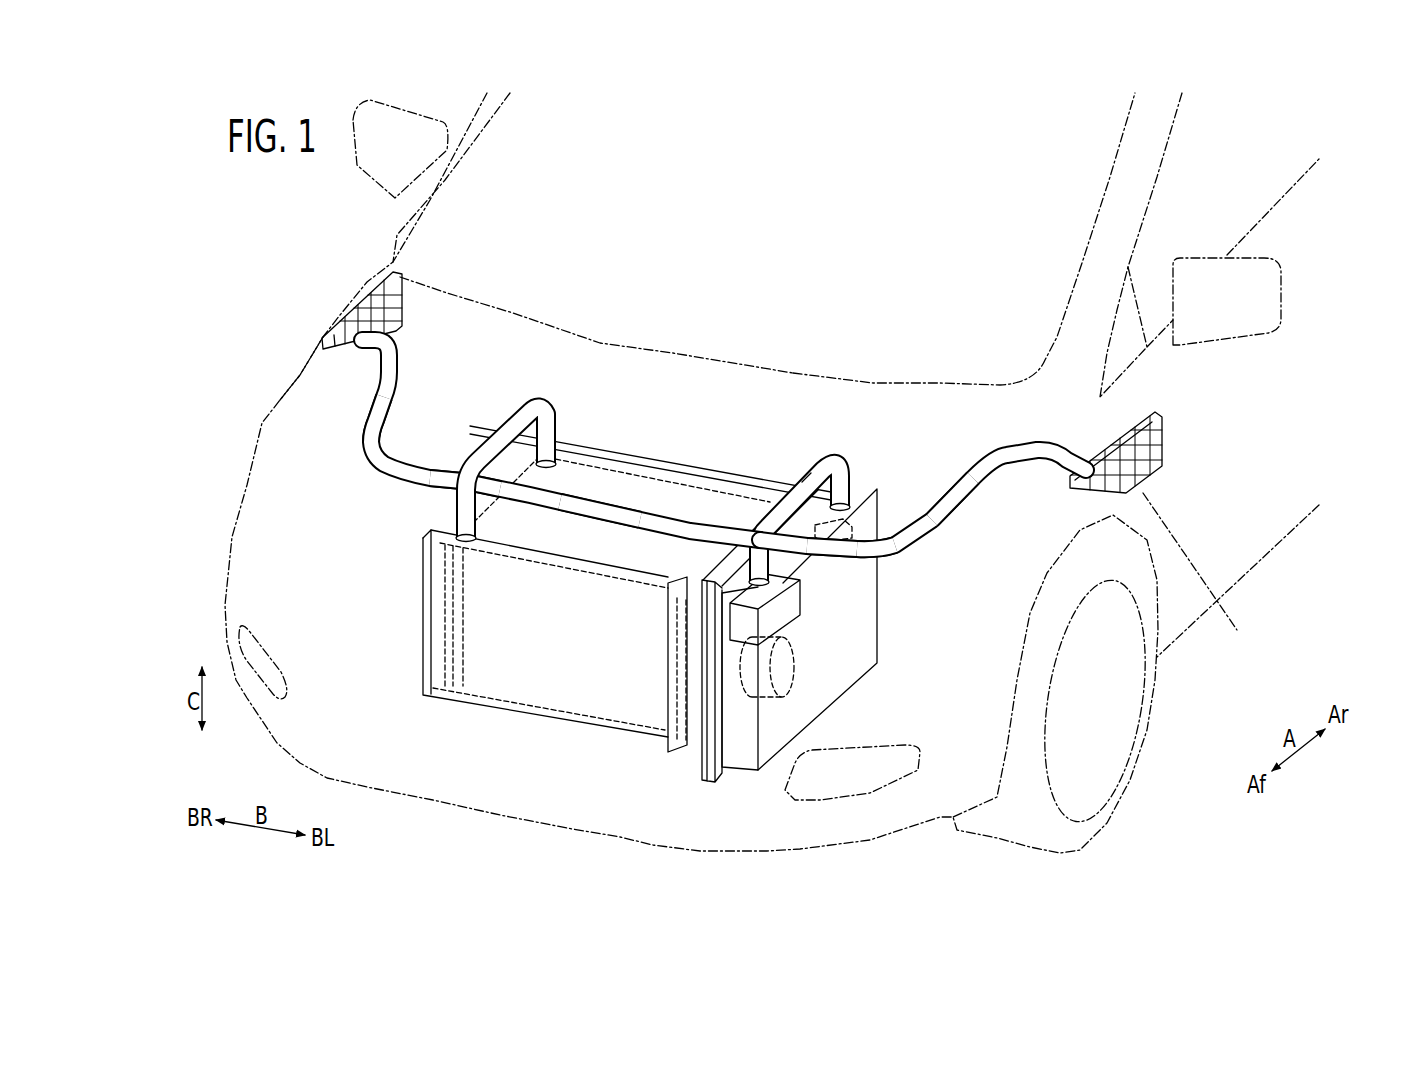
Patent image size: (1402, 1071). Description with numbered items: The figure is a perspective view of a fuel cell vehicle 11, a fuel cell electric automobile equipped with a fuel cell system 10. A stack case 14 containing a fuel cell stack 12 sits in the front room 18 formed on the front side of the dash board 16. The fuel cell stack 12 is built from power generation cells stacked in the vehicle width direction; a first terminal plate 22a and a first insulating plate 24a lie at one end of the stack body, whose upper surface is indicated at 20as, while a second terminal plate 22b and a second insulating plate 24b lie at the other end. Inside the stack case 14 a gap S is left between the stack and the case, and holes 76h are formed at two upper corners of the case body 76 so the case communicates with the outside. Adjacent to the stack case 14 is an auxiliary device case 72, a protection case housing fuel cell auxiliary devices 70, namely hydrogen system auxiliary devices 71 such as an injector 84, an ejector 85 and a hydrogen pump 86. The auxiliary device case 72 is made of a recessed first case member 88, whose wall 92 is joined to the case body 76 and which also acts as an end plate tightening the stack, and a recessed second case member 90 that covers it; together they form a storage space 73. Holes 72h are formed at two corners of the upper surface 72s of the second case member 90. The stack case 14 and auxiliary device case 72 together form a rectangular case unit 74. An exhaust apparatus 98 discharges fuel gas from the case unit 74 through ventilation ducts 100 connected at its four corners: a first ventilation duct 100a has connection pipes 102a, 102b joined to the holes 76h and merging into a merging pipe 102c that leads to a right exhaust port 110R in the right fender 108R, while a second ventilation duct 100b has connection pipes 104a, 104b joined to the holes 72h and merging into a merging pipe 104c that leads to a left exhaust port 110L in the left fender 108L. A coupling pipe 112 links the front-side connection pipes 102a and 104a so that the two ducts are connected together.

The fuel cell system 10 is at (382, 586).
The fuel cell vehicle 11 is at (240, 211).
The fuel cell stack 12 is at (660, 472).
The stack case 14 is at (708, 470).
The dash board 16 is at (675, 373).
The front room 18 is at (873, 432).
The upper surface of heat exchanger 20as is at (627, 483).
The first terminal plate 22a is at (667, 645).
The second terminal plate 22b is at (460, 615).
The first insulating plate 24a is at (685, 680).
The second insulating plate 24b is at (450, 650).
The fuel cell auxiliary devices 70 is at (848, 640).
The hydrogen system auxiliary devices 71 is at (819, 629).
The auxiliary device case 72 is at (797, 468).
The holes 72h is at (848, 477).
The upper surface 72s is at (817, 517).
The storage space 73 is at (840, 675).
The case unit 74 is at (769, 417).
The case body 76 is at (507, 700).
The holes 76h is at (547, 457).
The injector 84 is at (818, 583).
The ejector 85 is at (783, 612).
The hydrogen pump 86 is at (787, 672).
The first case member 88 is at (685, 752).
The second case member 90 is at (745, 760).
The wall 92 is at (745, 512).
The exhaust apparatus 98 is at (488, 415).
The hose 100 is at (668, 474).
The first ventilation duct 100a is at (370, 460).
The second ventilation duct 100b is at (957, 475).
The connection pipe 102a is at (460, 503).
The connection pipe 102b is at (558, 427).
The merging pipe 102c is at (372, 412).
The connection pipe 104a is at (845, 570).
The connection pipe 104b is at (873, 490).
The merging pipe 104c is at (942, 526).
The right fender 108R is at (287, 387).
The left fender 108L is at (1231, 575).
The right exhaust port 110R is at (373, 293).
The left exhaust port 110L is at (1155, 439).
The coupling pipe 112 is at (600, 508).
The gap S is at (563, 708).